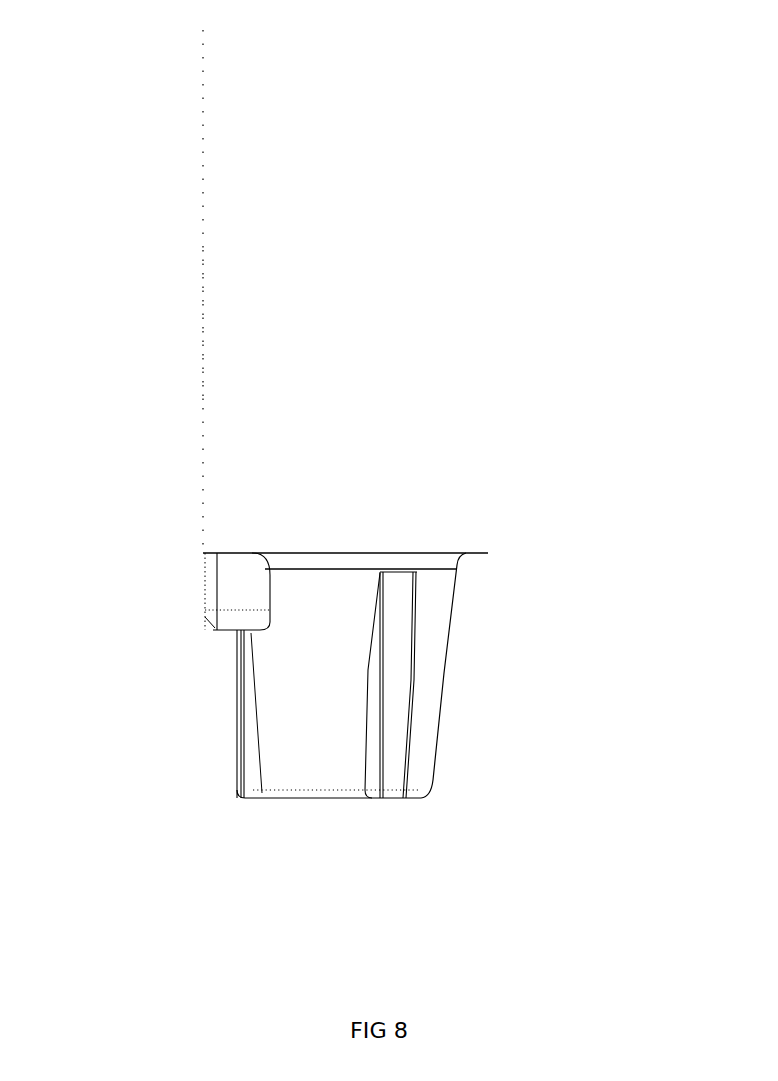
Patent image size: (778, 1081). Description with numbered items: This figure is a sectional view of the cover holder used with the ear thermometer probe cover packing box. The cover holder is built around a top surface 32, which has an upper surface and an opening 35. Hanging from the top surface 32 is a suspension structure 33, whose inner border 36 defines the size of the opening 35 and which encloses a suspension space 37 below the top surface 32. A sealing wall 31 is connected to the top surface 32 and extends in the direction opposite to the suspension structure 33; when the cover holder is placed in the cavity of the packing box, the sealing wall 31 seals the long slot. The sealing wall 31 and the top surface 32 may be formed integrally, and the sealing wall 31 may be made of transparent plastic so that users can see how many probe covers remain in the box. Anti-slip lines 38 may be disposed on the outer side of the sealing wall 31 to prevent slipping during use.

The sealing wall 31 is at (203, 142).
The anti-slip lines 38 is at (203, 318).
The top surface 32 is at (488, 553).
The opening 35 is at (348, 561).
The inner border 36 is at (427, 568).
The suspension space 37 is at (320, 684).
The suspension structure 33 is at (437, 743).